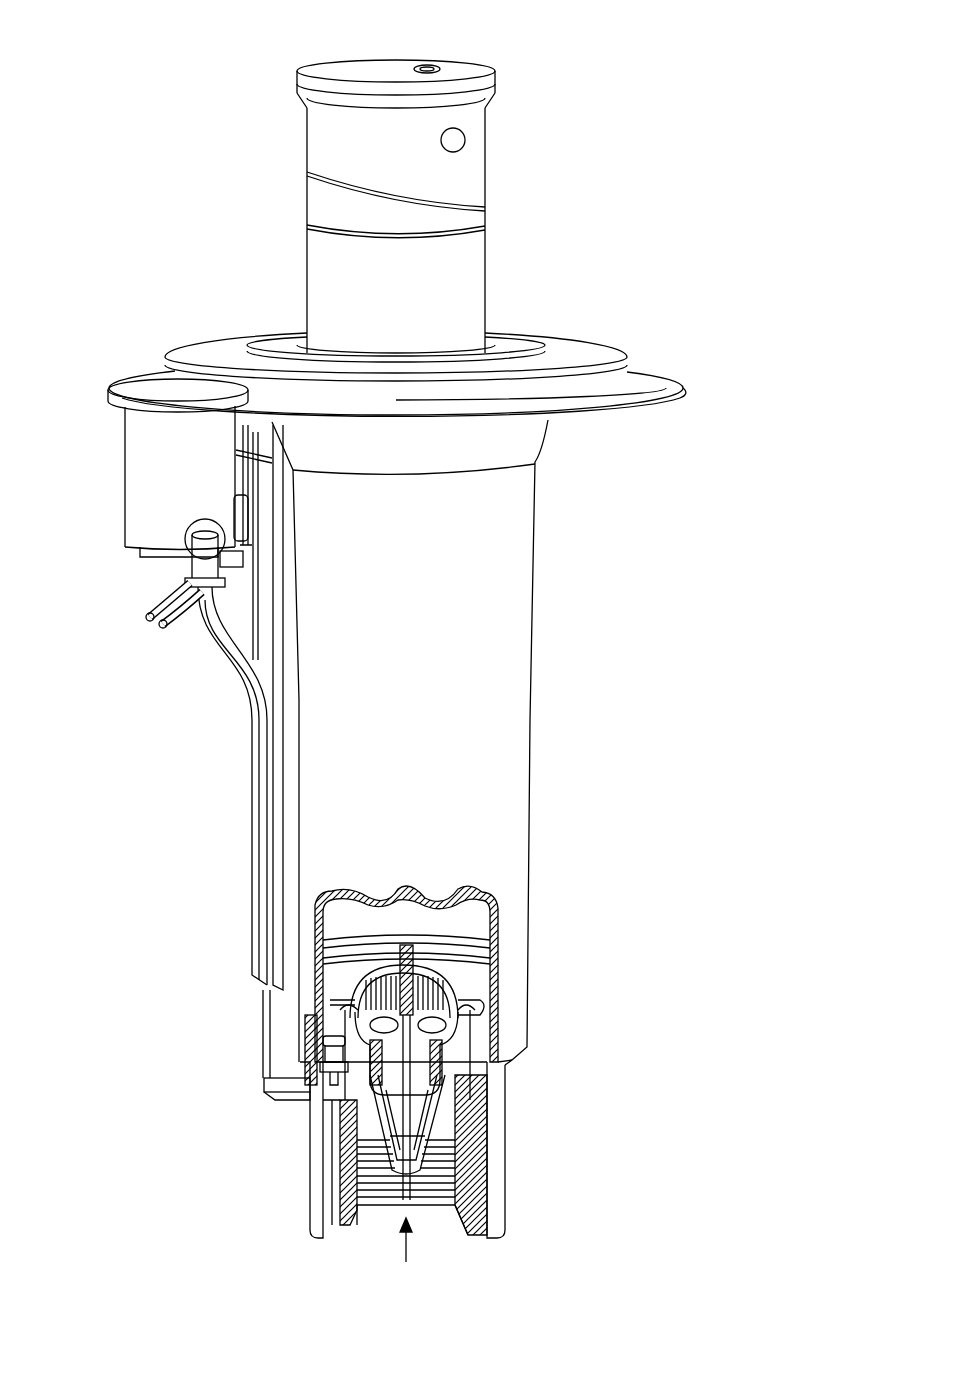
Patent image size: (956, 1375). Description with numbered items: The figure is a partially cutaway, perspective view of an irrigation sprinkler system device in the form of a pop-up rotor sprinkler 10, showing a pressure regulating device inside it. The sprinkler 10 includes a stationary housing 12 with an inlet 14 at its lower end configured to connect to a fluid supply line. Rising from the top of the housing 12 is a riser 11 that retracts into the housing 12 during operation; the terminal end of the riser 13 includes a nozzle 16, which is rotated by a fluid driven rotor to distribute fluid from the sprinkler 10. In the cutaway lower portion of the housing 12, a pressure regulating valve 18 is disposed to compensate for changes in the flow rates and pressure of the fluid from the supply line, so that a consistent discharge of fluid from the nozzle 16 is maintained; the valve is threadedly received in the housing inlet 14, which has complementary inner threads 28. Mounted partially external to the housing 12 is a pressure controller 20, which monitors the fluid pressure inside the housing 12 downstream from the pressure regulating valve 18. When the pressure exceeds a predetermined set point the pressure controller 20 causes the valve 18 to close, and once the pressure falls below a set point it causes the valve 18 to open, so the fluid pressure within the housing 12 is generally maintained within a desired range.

The pop-up rotor sprinkler 10 is at (205, 785).
The riser 11 is at (452, 296).
The stationary housing 12 is at (530, 730).
The terminal end of the riser 13 is at (458, 72).
The inlet 14 is at (440, 1244).
The nozzle 16 is at (466, 140).
The pressure regulating valve 18 is at (460, 1150).
The pressure controller 20 is at (122, 470).
The inner threads 28 is at (455, 1110).